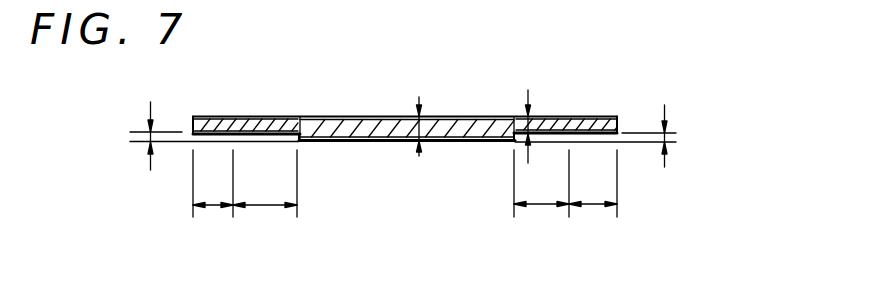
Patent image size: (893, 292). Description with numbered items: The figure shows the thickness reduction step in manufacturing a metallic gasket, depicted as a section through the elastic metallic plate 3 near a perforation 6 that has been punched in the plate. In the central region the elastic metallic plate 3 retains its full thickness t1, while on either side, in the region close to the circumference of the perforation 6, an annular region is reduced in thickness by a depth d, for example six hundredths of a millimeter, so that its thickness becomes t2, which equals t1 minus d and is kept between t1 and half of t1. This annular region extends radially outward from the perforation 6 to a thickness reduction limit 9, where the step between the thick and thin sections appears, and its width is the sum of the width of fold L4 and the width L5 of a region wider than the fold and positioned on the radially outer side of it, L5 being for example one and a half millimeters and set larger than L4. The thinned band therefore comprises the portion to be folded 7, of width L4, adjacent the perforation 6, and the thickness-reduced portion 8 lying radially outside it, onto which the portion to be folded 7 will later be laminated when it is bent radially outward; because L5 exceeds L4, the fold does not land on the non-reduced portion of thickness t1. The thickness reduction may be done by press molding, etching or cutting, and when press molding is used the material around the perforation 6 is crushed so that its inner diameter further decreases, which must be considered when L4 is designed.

The elastic metallic plate 3 is at (352, 128).
The perforation 6 is at (193, 127).
The portion to be folded 7 is at (216, 121).
The thickness-reduced portion 8 is at (268, 122).
The thickness reduction limit 9 is at (298, 145).
The thickness of the elastic metallic plate t1 is at (421, 128).
The predetermined thickness of the folded portion t2 is at (516, 130).
The depth d is at (402, 136).
The width of fold L4 is at (405, 197).
The width of region wider than the fold L5 is at (401, 197).